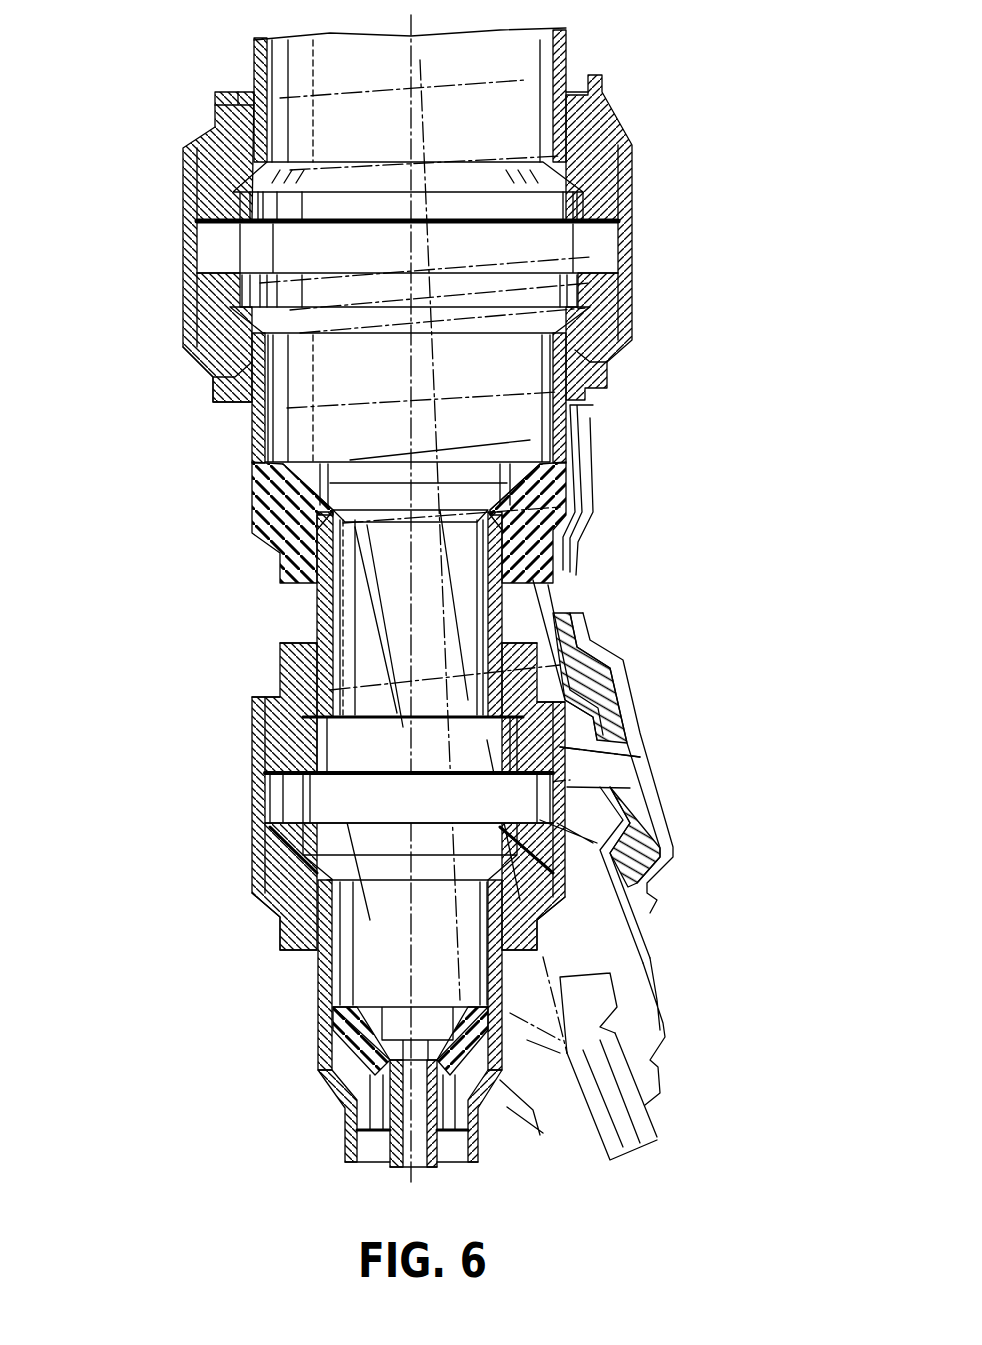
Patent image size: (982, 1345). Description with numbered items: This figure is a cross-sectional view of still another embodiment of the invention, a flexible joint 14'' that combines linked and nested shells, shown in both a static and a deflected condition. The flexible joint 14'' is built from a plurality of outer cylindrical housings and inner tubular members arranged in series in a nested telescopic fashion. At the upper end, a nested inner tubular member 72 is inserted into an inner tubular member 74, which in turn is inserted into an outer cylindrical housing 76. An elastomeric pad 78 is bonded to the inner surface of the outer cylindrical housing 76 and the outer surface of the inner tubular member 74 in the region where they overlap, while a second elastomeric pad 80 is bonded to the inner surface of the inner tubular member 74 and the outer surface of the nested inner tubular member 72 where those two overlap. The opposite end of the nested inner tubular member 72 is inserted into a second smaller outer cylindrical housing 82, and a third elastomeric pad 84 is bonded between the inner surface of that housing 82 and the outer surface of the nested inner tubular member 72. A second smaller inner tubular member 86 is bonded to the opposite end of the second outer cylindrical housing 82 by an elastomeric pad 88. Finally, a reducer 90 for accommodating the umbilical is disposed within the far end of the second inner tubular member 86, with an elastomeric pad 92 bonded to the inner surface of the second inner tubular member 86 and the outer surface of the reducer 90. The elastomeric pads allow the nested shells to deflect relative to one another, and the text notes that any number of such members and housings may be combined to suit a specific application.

The flexible joint 14'' is at (639, 726).
The nested inner tubular member 72 is at (316, 608).
The inner tubular member 74 is at (252, 460).
The outer cylindrical housing 76 is at (183, 258).
The elastomeric pad 78 is at (287, 408).
The second elastomeric pad 80 is at (317, 590).
The second smaller outer cylindrical housing 82 is at (252, 803).
The third elastomeric pad 84 is at (310, 648).
The second smaller inner tubular member 86 is at (317, 1020).
The elastomeric pad 88 is at (307, 950).
The reducer 90 is at (420, 1140).
The elastomeric pad 92 is at (342, 1092).